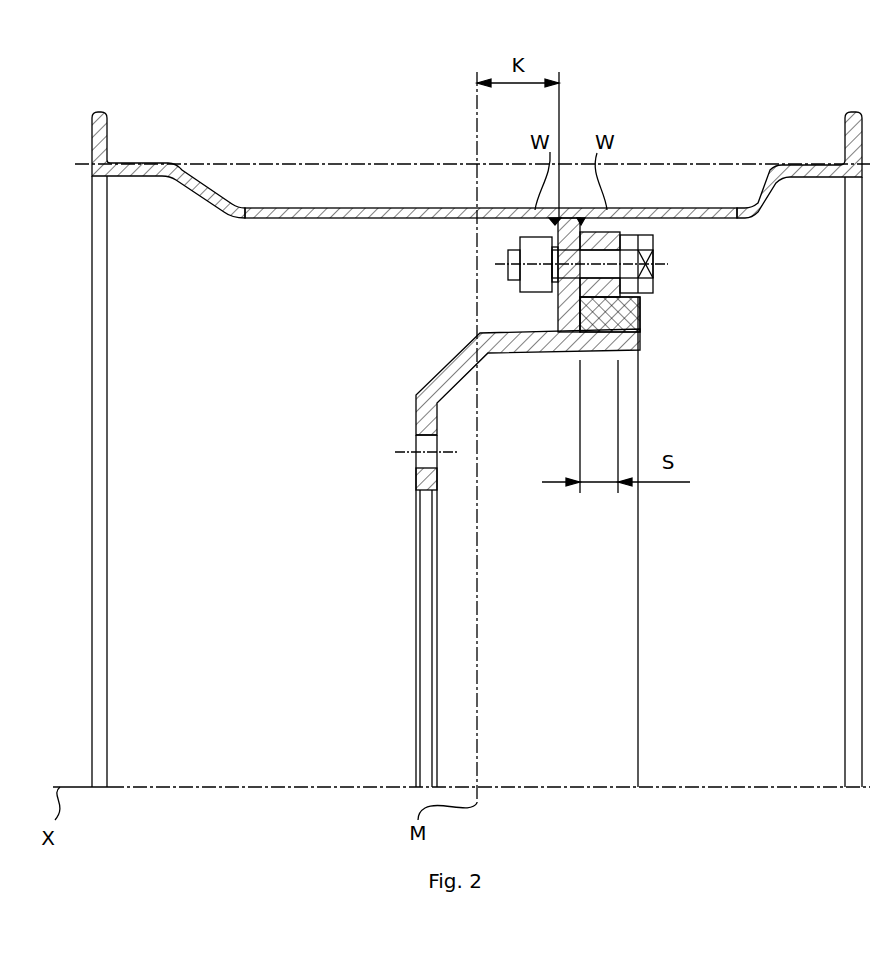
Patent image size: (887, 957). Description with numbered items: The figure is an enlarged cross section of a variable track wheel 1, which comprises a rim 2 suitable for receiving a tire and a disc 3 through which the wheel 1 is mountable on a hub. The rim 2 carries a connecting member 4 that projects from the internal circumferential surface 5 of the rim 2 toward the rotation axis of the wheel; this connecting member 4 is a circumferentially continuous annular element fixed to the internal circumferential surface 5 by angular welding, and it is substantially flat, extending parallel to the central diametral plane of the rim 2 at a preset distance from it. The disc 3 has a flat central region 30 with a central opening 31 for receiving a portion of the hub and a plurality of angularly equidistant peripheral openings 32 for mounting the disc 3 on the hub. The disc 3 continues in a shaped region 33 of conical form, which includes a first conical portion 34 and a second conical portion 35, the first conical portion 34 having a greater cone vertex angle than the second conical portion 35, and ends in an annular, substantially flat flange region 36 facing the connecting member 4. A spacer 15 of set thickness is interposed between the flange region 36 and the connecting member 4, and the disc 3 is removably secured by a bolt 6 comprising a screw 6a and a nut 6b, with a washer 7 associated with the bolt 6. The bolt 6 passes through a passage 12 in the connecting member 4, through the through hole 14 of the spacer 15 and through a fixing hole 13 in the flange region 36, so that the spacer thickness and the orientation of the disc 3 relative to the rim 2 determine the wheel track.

The variable track wheel 1 is at (140, 105).
The rim 2 is at (770, 168).
The disc 3 is at (504, 425).
The connecting member 4 is at (555, 322).
The internal circumferential surface 5 is at (312, 222).
The bolt 6 is at (452, 180).
The screw 6a is at (655, 272).
The nut 6b is at (508, 270).
The washer 7 is at (515, 210).
The passage 12 is at (578, 352).
The fixing hole 13 is at (655, 232).
The through hole 14 is at (618, 335).
The spacer 15 is at (625, 296).
The flat central region 30 is at (416, 425).
The central opening 31 is at (425, 493).
The peripheral openings 32 is at (418, 470).
The shaped region 33 is at (375, 305).
The first conical portion 34 is at (445, 368).
The second conical portion 35 is at (555, 322).
The flange region 36 is at (618, 210).